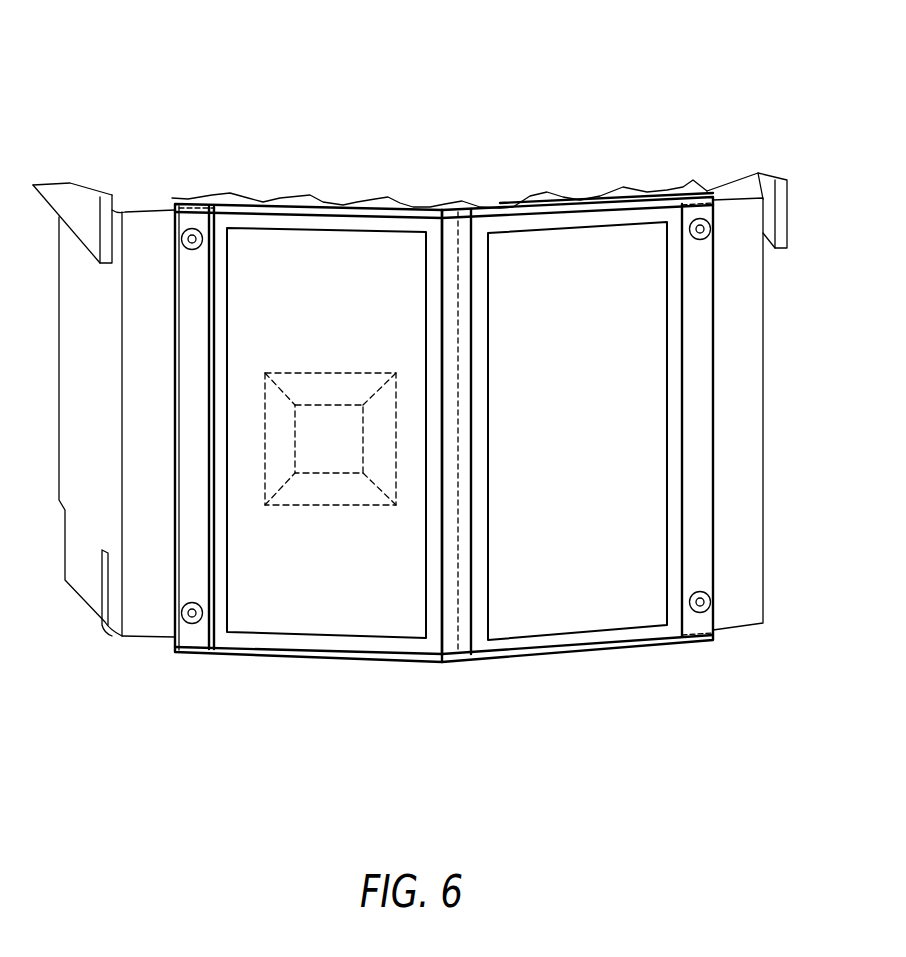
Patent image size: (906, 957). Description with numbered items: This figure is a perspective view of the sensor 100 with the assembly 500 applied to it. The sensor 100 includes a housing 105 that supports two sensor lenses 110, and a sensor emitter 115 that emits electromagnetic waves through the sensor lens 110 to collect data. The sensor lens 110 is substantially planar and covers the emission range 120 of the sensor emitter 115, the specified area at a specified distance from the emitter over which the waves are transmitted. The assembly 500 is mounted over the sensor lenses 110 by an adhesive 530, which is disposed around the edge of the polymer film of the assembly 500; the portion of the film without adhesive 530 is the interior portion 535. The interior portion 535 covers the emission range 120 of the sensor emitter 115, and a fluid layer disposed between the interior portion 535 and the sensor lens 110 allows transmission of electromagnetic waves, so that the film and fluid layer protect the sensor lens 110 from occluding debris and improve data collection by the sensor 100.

The sensor 100 is at (90, 58).
The housing 105 is at (148, 233).
The sensor lens 110 is at (320, 257).
The sensor emitter 115 is at (345, 404).
The emission range 120 is at (302, 372).
The assembly 500 is at (273, 193).
The adhesive 530 is at (218, 222).
The interior portion 535 is at (373, 257).